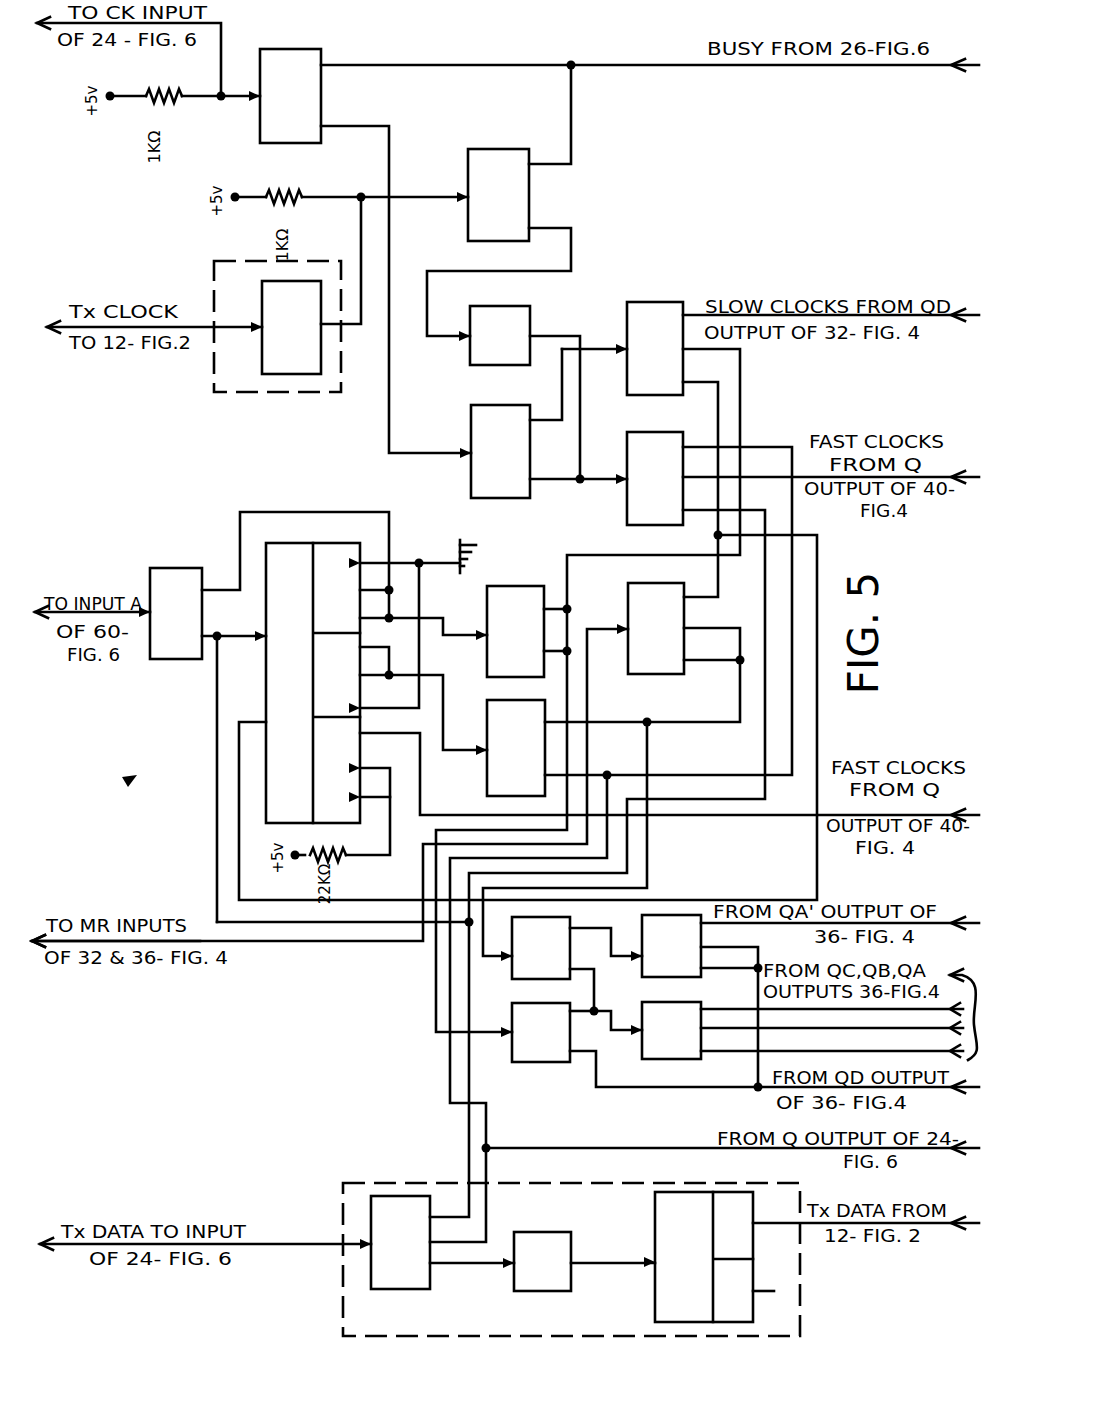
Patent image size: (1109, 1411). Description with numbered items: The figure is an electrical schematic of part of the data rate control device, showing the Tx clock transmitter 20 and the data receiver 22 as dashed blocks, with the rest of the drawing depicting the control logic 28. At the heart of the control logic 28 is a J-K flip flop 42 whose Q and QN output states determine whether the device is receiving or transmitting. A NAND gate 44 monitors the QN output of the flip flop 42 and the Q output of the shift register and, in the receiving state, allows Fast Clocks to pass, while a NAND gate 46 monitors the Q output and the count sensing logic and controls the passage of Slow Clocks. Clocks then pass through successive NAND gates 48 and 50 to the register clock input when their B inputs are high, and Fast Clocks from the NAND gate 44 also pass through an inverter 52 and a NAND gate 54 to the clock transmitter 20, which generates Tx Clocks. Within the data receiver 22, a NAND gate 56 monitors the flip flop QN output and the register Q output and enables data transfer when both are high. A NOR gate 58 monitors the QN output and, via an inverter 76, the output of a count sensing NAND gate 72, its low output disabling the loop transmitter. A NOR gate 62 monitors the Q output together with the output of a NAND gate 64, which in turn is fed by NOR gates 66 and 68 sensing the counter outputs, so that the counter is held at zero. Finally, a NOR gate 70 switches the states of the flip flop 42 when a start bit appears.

The Tx clock transmitter 20 is at (212, 264).
The data receiver 22 is at (343, 1293).
The control logic 28 is at (128, 782).
The J-K flip flop 42 is at (290, 543).
The NAND gate 44 is at (627, 455).
The NAND gate 46 is at (640, 302).
The NAND gate 48 is at (471, 420).
The NAND gate 50 is at (298, 49).
The inverter 52 is at (531, 312).
The NAND gate 54 is at (503, 149).
The NAND gate 56 is at (402, 1196).
The NOR gate 58 is at (176, 568).
The NOR gate 62 is at (632, 674).
The NAND gate 64 is at (512, 972).
The NOR gate 66 is at (642, 1052).
The NOR gate 68 is at (682, 915).
The NOR gate 70 is at (487, 714).
The NAND gate 72 is at (554, 1062).
The inverter 76 is at (499, 586).